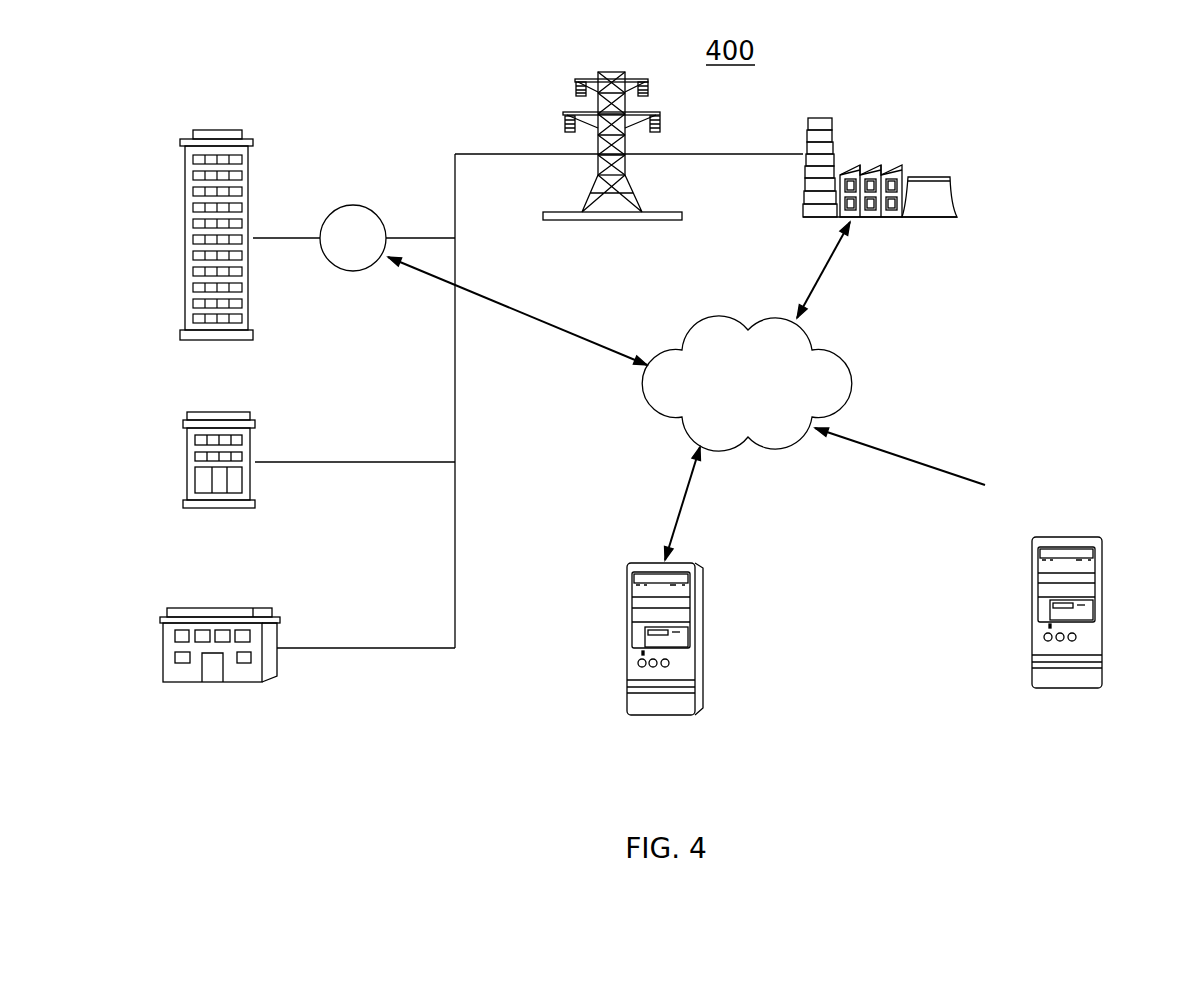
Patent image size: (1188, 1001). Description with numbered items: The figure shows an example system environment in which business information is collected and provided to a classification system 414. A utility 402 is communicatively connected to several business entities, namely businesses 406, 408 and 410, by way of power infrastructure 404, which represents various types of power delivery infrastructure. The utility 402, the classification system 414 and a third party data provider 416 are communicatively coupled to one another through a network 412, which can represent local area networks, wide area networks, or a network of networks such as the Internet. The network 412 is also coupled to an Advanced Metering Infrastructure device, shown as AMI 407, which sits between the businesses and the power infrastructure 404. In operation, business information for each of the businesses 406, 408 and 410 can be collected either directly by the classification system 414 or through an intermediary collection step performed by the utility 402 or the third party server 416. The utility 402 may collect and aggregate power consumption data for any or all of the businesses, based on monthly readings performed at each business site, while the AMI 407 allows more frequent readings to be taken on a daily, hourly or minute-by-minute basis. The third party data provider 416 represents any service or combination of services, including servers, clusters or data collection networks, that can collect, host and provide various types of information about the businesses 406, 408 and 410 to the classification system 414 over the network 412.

The utility 402 is at (937, 177).
The power infrastructure 404 is at (612, 72).
The business 406 is at (253, 157).
The Advanced Metering Infrastructure (AMI) device 407 is at (369, 206).
The business 408 is at (252, 445).
The business 410 is at (280, 635).
The network 412 is at (848, 367).
The classification system 414 is at (1092, 573).
The third party data provider 416 is at (703, 588).